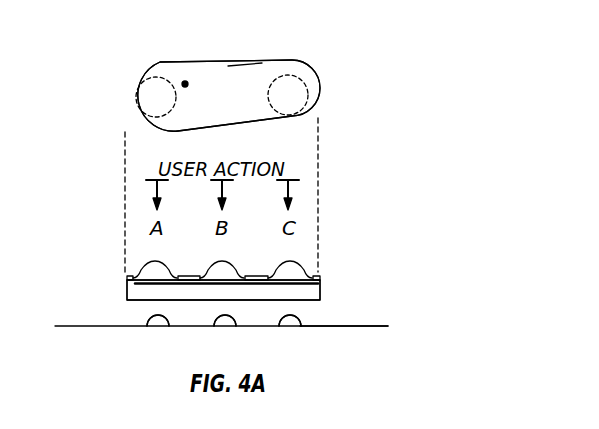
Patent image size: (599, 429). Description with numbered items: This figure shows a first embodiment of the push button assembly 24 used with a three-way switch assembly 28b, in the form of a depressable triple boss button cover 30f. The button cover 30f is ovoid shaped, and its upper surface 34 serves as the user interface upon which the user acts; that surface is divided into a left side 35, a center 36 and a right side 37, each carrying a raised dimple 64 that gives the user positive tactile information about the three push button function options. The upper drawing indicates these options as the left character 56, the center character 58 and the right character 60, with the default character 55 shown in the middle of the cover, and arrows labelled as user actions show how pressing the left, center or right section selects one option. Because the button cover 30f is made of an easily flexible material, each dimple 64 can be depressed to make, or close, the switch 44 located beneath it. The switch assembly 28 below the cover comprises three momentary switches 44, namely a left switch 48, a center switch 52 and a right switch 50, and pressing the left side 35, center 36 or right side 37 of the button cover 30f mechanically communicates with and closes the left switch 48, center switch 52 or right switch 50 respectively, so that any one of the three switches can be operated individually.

The push button assembly 24 is at (98, 70).
The switch assembly 28 is at (97, 307).
The three-way switch assembly 28b is at (366, 344).
The button cover 30f is at (320, 92).
The upper surface 34 is at (185, 83).
The left side 35 is at (202, 165).
The center 36 is at (236, 70).
The right side 37 is at (246, 195).
The switches 44 is at (141, 336).
The left switch 48 is at (171, 317).
The right switch 50 is at (300, 317).
The center switch 52 is at (250, 340).
The default characters 55 is at (223, 74).
The left character 56 is at (171, 119).
The center character 58 is at (249, 88).
The right character 60 is at (292, 82).
The raised dimple 64 is at (140, 97).